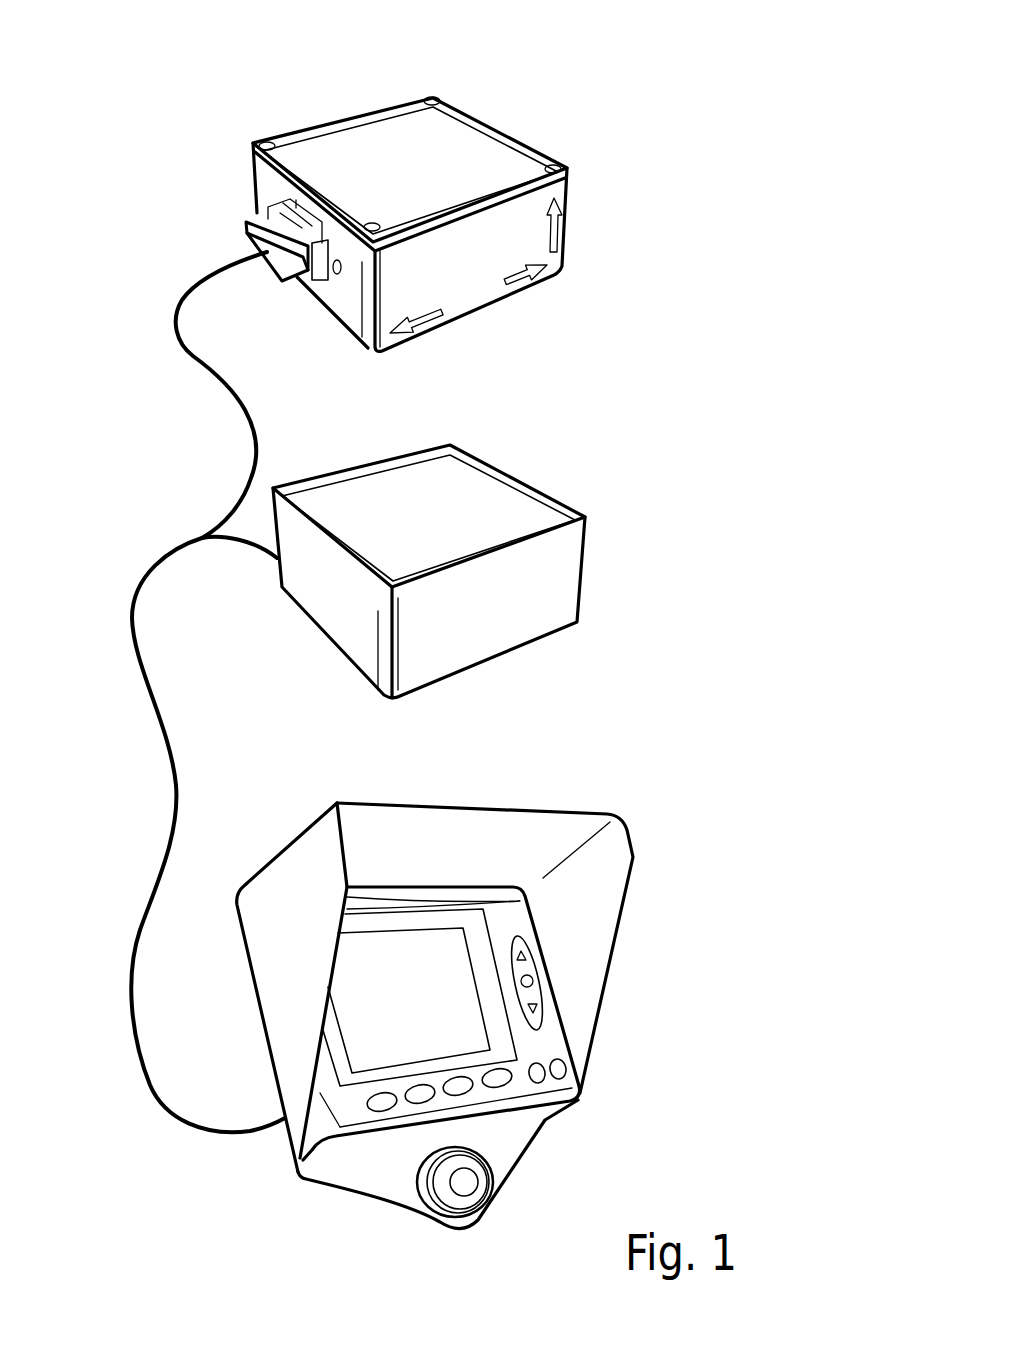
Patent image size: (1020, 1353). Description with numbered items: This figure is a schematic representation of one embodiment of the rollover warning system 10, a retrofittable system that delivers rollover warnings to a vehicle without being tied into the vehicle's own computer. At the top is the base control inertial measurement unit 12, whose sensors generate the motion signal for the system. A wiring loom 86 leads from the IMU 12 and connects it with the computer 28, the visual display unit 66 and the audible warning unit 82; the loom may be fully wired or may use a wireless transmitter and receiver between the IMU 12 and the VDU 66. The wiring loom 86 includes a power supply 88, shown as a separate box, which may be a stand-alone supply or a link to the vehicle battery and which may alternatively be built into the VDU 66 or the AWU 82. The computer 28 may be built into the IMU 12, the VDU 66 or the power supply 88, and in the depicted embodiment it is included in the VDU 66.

The rollover warning system 10 is at (395, 60).
The base control inertial measurement unit 12 is at (325, 133).
The wiring loom 86 is at (214, 378).
The power supply 88 is at (518, 493).
The visual display unit 66 is at (550, 807).
The audible warning unit 82 is at (655, 1083).
The computer 28 is at (236, 1181).